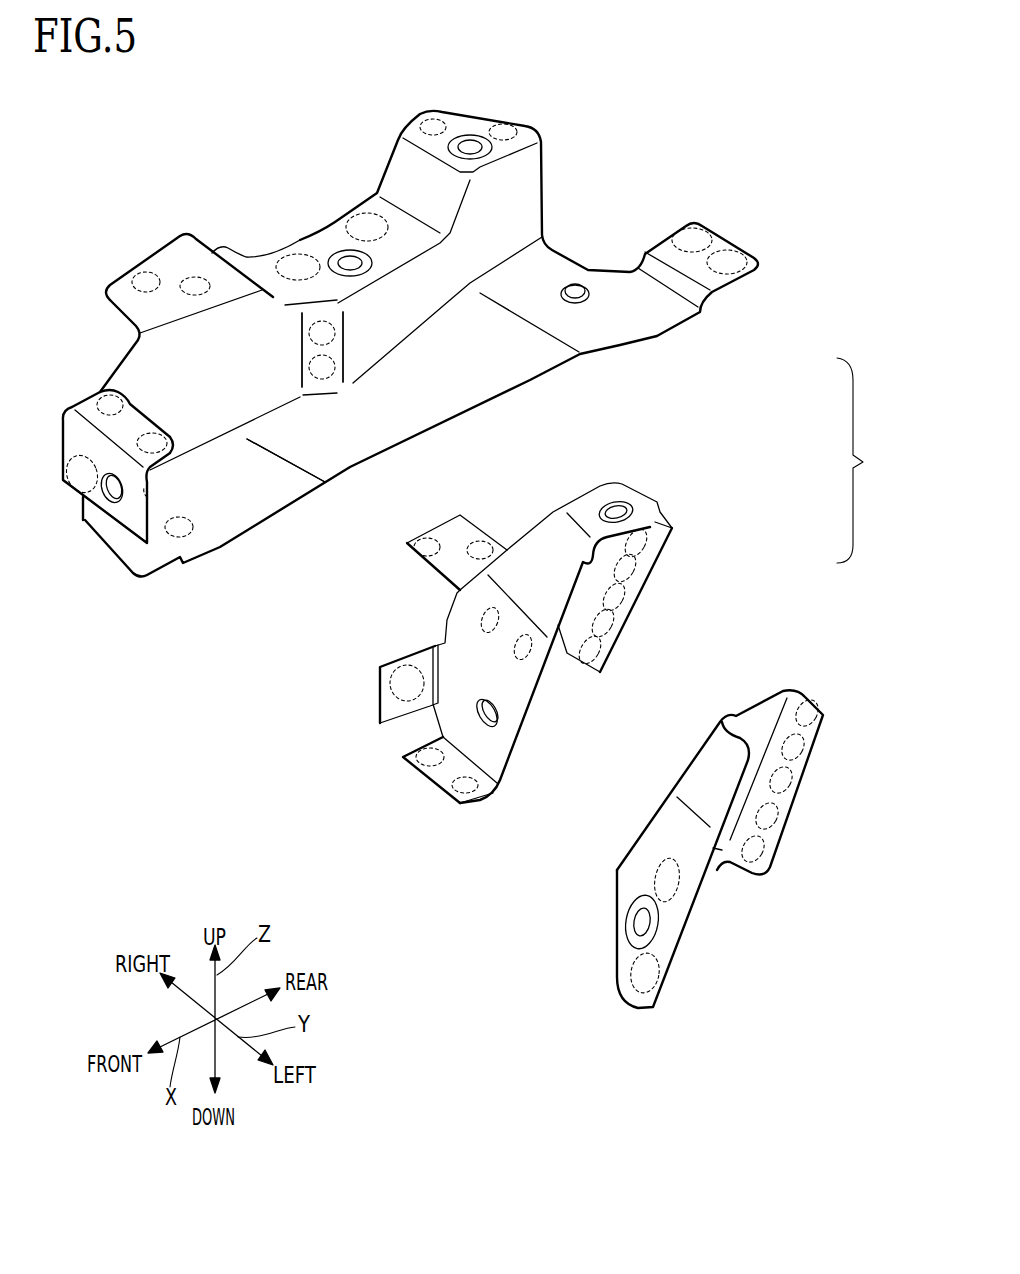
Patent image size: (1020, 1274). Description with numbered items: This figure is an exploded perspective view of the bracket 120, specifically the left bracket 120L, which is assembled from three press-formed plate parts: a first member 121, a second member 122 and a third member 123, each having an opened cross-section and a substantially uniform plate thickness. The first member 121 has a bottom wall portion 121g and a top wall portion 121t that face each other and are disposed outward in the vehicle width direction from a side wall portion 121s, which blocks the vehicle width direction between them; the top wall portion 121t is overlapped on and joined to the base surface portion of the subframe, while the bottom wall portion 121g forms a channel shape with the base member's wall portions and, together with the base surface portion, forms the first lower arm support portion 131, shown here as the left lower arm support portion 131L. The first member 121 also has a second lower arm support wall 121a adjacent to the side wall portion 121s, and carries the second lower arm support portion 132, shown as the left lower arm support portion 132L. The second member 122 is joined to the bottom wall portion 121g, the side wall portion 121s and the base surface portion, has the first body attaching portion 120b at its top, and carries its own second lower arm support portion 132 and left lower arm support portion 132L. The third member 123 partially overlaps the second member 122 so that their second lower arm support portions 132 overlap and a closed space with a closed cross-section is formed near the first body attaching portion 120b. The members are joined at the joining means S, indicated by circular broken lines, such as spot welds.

The bracket 120 is at (881, 460).
The left bracket 120L is at (881, 460).
The first body attaching portion 120b is at (633, 500).
The first member 121 is at (660, 323).
The top wall portion 121t is at (175, 253).
The side wall portion 121s is at (183, 360).
The bottom wall portion 121g is at (453, 385).
The second lower arm support wall 121a is at (63, 443).
The second member 122 is at (653, 547).
The third member 123 is at (755, 690).
The first lower arm support portion 131 is at (633, 232).
The left lower arm support portion 131L is at (587, 287).
The second lower arm support portion 132 is at (356, 726).
The left lower arm support portion 132L is at (110, 500).
The joining means S is at (147, 270).